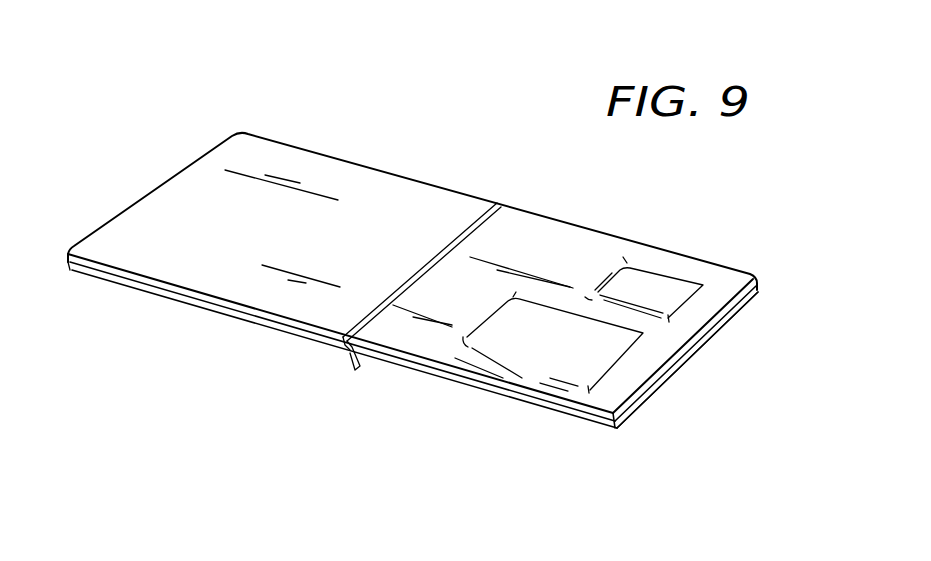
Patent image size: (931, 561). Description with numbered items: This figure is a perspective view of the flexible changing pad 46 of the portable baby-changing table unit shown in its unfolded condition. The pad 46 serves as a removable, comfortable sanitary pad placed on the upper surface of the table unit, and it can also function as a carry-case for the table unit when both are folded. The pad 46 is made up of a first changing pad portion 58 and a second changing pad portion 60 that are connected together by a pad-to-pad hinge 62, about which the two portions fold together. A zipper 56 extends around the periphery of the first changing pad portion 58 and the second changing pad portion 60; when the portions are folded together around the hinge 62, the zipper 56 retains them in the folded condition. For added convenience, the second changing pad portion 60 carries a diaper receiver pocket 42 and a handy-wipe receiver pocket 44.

The flexible changing pad 46 is at (128, 200).
The first changing pad portion 58 is at (338, 187).
The pad-to-pad hinge 62 is at (462, 225).
The second changing pad portion 60 is at (557, 253).
The handy-wipe receiver pocket 44 is at (665, 288).
The diaper receiver pocket 42 is at (543, 345).
The zipper 56 is at (702, 345).